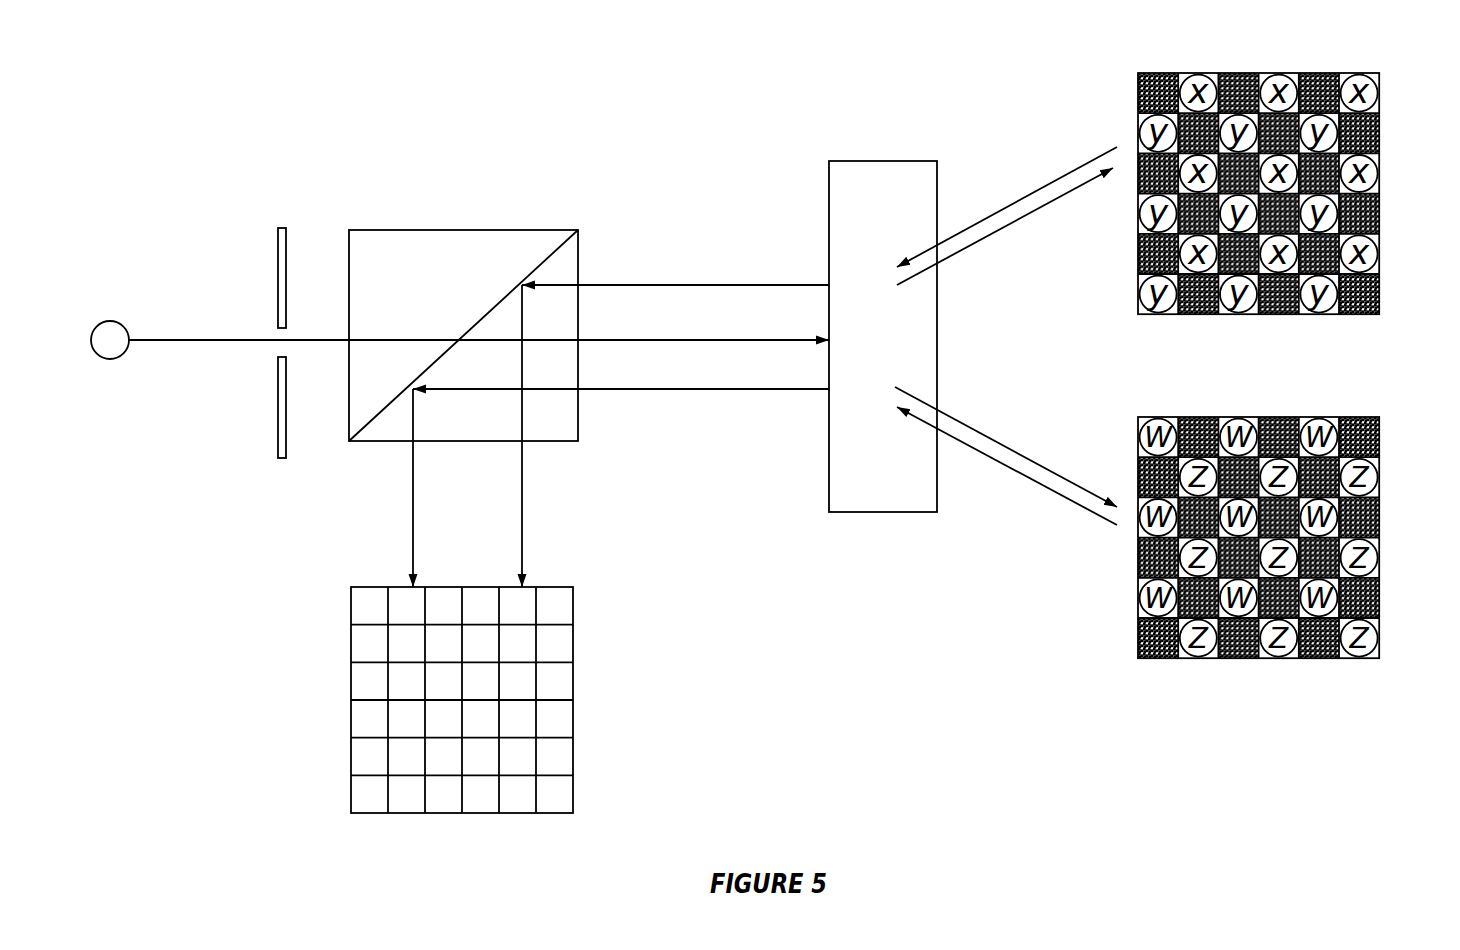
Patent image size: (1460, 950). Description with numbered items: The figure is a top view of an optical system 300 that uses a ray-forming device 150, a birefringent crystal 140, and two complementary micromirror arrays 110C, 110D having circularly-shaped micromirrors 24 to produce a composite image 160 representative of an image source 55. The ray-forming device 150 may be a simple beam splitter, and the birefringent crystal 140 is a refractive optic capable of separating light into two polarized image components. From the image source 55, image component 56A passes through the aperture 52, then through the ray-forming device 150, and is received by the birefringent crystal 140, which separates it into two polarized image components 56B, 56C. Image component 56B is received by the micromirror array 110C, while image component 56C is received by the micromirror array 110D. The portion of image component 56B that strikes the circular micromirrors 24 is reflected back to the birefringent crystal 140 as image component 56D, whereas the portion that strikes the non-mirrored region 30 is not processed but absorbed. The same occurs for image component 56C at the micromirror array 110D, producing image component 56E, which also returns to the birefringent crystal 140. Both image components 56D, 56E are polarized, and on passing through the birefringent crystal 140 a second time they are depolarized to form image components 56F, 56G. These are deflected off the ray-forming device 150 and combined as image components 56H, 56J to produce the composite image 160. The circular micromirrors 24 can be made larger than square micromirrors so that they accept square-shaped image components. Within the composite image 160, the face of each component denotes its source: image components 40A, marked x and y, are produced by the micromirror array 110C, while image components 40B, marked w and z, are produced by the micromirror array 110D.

The optical system 300 is at (973, 48).
The image source 55 is at (110, 340).
The image component 56A is at (215, 343).
The aperture 52 is at (279, 333).
The ray-forming device 150 is at (463, 335).
The birefringent crystal 140 is at (883, 336).
The image component 56F is at (703, 280).
The image component 56G is at (706, 393).
The image component 56H is at (412, 493).
The image component 56J is at (527, 493).
The image component 56D is at (1045, 183).
The image component 56B is at (1005, 232).
The image component 56C is at (1005, 445).
The image component 56E is at (1043, 488).
The micromirror array 110C is at (1222, 73).
The micromirror array 110D is at (1220, 417).
The circularly-shaped micromirrors 24 is at (1280, 67).
The non-mirrored region 30 is at (1379, 212).
The composite image 160 is at (351, 682).
The image components 40A is at (573, 608).
The image components 40B is at (573, 720).